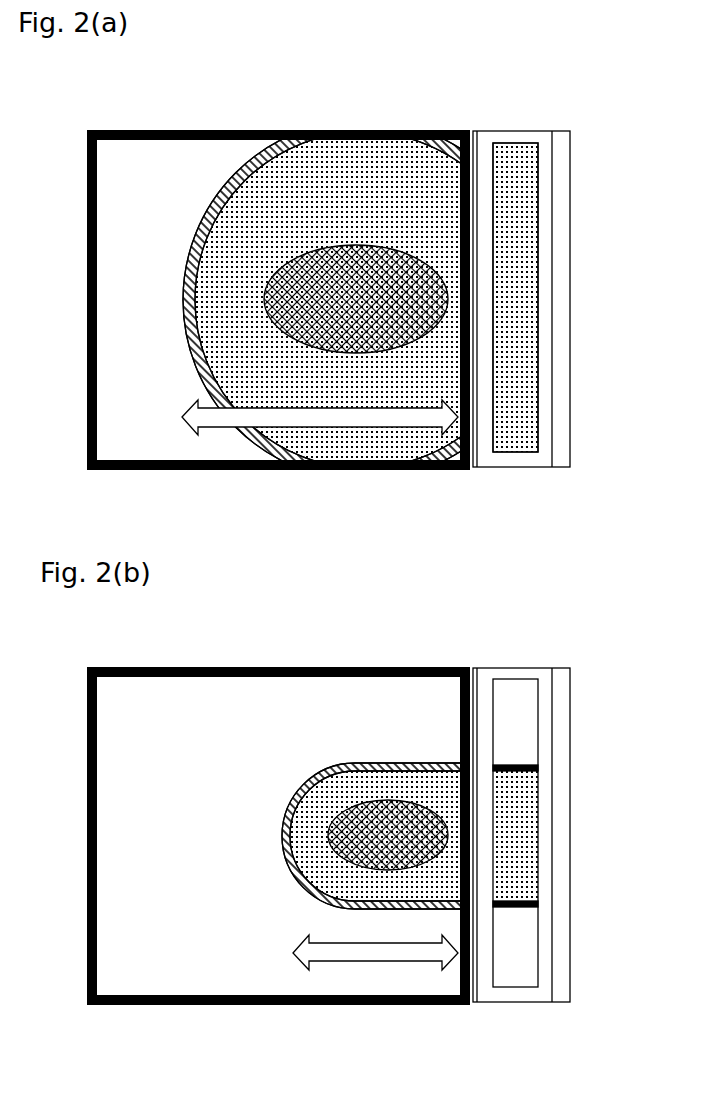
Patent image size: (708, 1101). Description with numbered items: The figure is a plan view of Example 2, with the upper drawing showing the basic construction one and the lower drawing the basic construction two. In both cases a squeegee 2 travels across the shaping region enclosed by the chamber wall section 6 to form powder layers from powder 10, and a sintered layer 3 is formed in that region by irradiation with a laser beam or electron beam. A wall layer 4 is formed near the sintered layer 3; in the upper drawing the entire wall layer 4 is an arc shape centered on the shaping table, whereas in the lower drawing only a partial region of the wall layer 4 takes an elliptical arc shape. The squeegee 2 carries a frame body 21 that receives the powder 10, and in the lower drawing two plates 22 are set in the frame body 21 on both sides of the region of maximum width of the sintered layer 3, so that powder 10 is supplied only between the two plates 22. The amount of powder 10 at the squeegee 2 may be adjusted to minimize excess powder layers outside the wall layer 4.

In FIG. 2A, the squeegee 2 is at (552, 266).
In FIG. 2B, the squeegee 2 is at (553, 802).
In FIG. 2A, the sintered layer 3 is at (322, 244).
In FIG. 2B, the sintered layer 3 is at (349, 800).
In FIG. 2A, the wall layer 4 is at (190, 247).
In FIG. 2B, the wall layer 4 is at (287, 806).
In FIG. 2A, the chamber wall section 6 is at (87, 300).
In FIG. 2B, the chamber wall section 6 is at (87, 838).
In FIG. 2A, the powder 10 is at (330, 383).
In FIG. 2B, the powder 10 is at (320, 860).
In FIG. 2A, the frame body 21 is at (537, 218).
In FIG. 2B, the frame body 21 is at (538, 718).
In FIG. 2B, the plate 22 is at (517, 762).